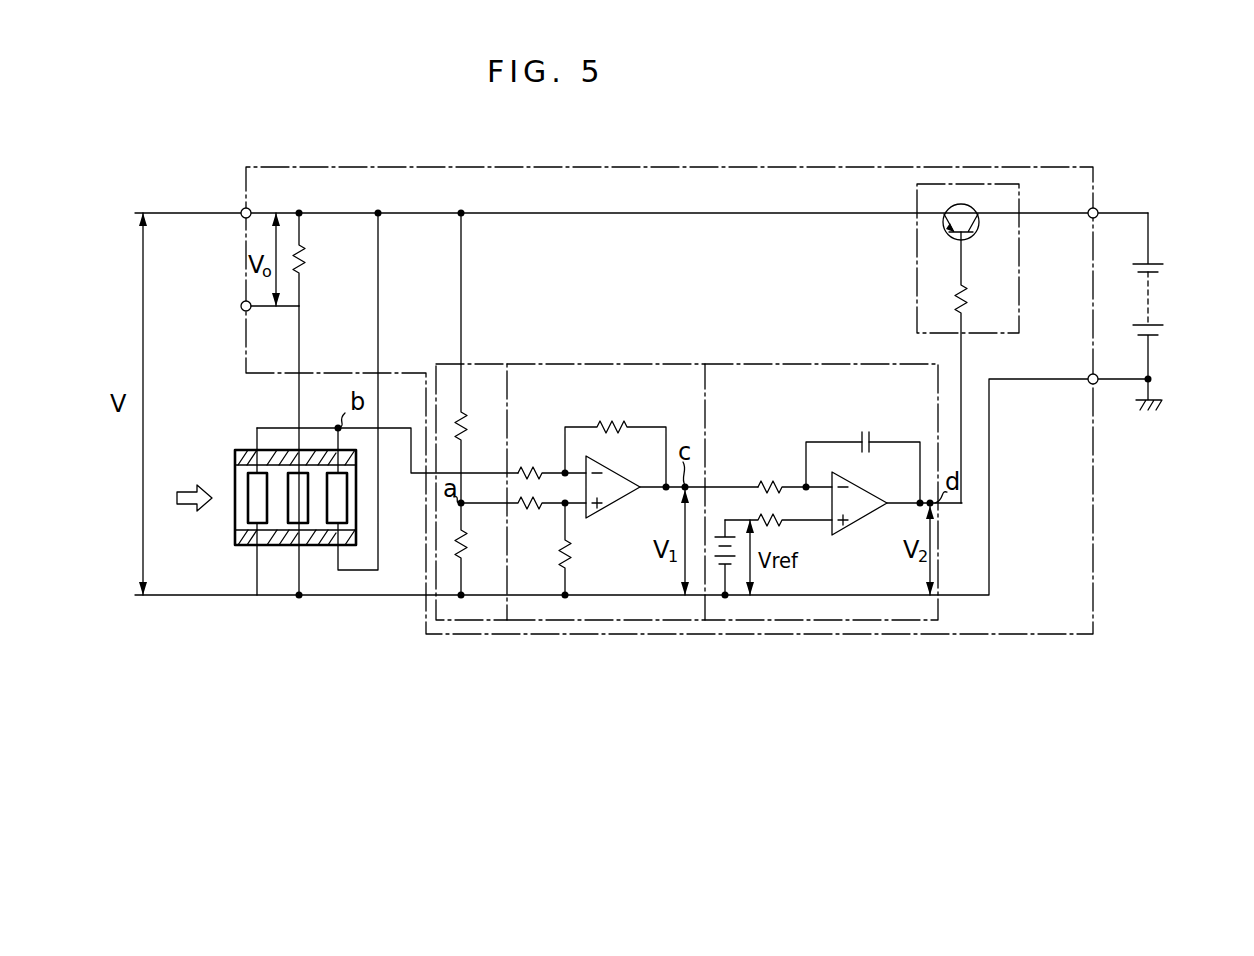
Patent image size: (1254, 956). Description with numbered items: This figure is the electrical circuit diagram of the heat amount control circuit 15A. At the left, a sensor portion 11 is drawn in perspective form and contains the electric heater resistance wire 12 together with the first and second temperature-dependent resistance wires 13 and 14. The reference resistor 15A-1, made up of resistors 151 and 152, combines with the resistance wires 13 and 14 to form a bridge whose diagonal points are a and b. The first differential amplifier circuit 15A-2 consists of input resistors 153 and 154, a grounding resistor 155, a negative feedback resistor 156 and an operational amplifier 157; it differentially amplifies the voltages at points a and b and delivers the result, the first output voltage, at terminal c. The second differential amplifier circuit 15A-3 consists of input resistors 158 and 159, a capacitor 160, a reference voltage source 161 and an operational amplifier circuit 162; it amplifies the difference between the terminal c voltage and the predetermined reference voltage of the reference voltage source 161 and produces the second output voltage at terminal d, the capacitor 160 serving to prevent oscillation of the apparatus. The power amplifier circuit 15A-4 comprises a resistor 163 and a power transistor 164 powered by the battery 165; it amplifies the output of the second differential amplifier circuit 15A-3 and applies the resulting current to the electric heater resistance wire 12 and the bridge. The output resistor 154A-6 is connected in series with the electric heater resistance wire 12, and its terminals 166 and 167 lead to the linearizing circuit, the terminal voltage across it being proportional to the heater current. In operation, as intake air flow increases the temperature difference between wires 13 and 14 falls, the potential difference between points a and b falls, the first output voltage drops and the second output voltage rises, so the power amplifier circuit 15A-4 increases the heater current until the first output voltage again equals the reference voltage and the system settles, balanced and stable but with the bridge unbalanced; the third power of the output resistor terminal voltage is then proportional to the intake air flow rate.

The flow sensor 11 is at (235, 452).
The electric heater resistance wire 12 is at (293, 517).
The first temperature-dependent resistance wire 13 is at (333, 517).
The second temperature-dependent resistance wire 14 is at (253, 513).
The heat amount control circuit 15A is at (782, 166).
The reference resistor 15A-1 is at (480, 363).
The first differential amplifier circuit 15A-2 is at (600, 363).
The second differential amplifier circuit 15A-3 is at (765, 363).
The power amplifier circuit 15A-4 is at (917, 322).
The resistor 151 is at (465, 420).
The resistor 152 is at (465, 546).
The input resistor 153 is at (531, 467).
The input resistor 154 is at (531, 509).
The output resistor 154A-6 is at (306, 258).
The grounding resistor 155 is at (575, 553).
The negative feedback resistor 156 is at (612, 425).
The operational amplifier 157 is at (629, 490).
The input resistor 158 is at (766, 480).
The input resistor 159 is at (766, 518).
The capacitor 160 is at (868, 433).
The reference voltage source 161 is at (713, 540).
The operational amplifier circuit 162 is at (866, 516).
The resistor 163 is at (966, 290).
The power transistor 164 is at (946, 237).
The battery 165 is at (1150, 310).
The terminal 166 is at (243, 211).
The terminal 167 is at (243, 304).